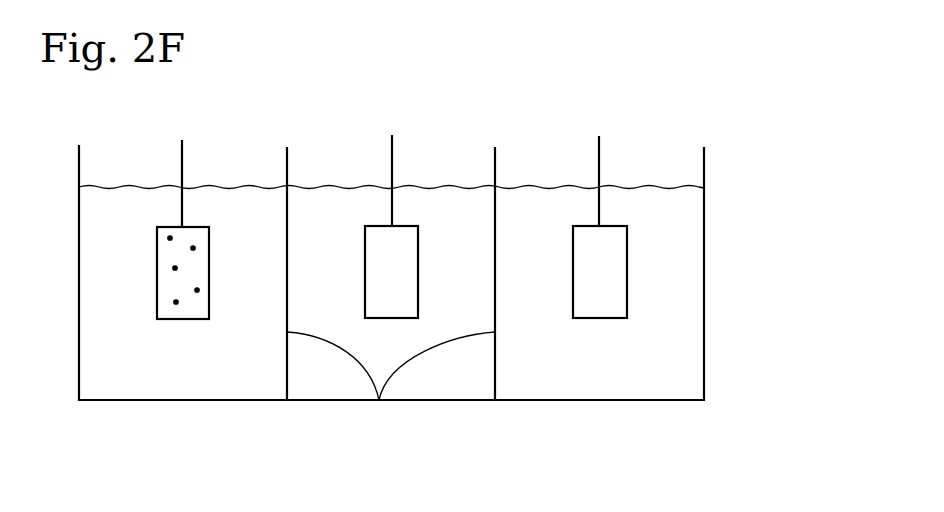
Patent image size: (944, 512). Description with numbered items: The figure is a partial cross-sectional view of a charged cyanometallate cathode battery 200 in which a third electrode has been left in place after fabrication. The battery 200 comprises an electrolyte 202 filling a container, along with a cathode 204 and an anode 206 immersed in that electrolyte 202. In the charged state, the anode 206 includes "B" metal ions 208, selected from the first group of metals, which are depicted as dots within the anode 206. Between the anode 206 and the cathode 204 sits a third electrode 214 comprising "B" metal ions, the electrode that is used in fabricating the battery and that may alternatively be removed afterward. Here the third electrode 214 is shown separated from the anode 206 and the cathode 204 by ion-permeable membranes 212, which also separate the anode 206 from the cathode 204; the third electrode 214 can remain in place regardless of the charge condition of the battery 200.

The battery 200 is at (740, 270).
The electrolyte 202 is at (207, 387).
The cathode 204 is at (640, 153).
The anode 206 is at (250, 156).
The "B" metal ions 208 is at (165, 230).
The ion-permeable membrane 212 is at (379, 400).
The third electrode 214 is at (444, 153).